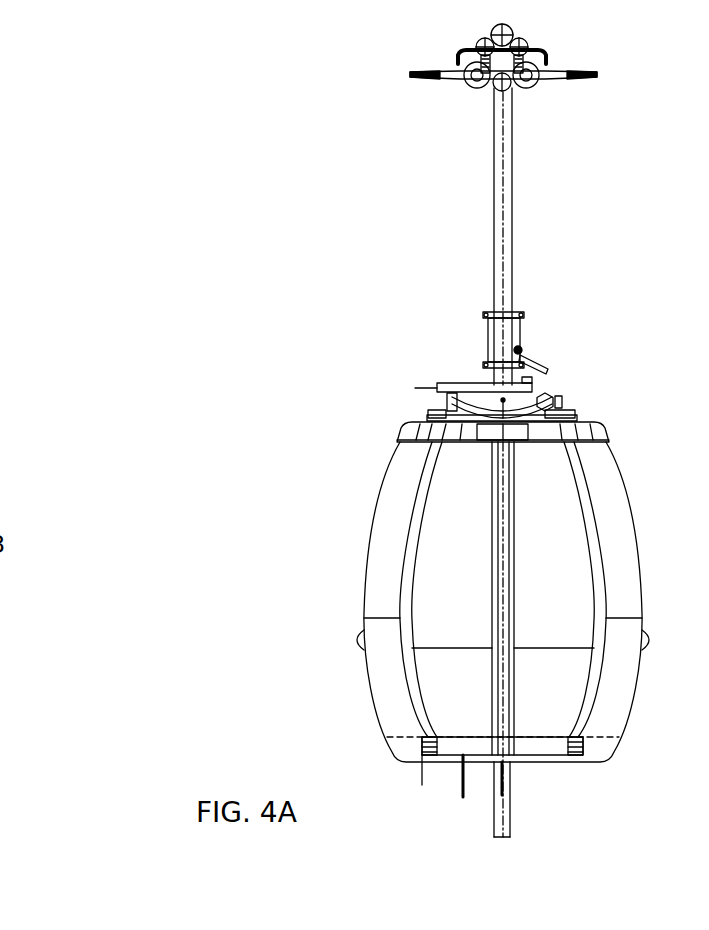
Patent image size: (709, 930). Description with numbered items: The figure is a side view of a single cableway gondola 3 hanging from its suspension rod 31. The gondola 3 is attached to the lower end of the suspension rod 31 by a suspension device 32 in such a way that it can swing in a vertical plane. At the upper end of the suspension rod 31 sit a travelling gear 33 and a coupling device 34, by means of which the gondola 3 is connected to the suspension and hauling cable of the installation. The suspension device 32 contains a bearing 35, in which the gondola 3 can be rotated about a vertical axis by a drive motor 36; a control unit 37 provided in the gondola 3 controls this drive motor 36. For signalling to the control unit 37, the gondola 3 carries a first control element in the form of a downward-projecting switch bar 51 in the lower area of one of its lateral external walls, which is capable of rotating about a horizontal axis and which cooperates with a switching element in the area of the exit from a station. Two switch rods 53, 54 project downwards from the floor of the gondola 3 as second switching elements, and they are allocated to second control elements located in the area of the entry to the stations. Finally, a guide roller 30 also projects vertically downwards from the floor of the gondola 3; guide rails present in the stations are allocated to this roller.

The cableway gondola 3 is at (642, 567).
The guide roller 30 is at (510, 817).
The suspension rod 31 is at (512, 212).
The suspension device 32 is at (518, 340).
The travelling gear 33 is at (497, 84).
The coupling device 34 is at (533, 83).
The bearing 35 is at (500, 354).
The drive motor 36 is at (557, 400).
The control unit 37 is at (510, 432).
The switch bar 51 is at (418, 773).
The switch rod 53 is at (507, 780).
The switch rod 54 is at (460, 790).